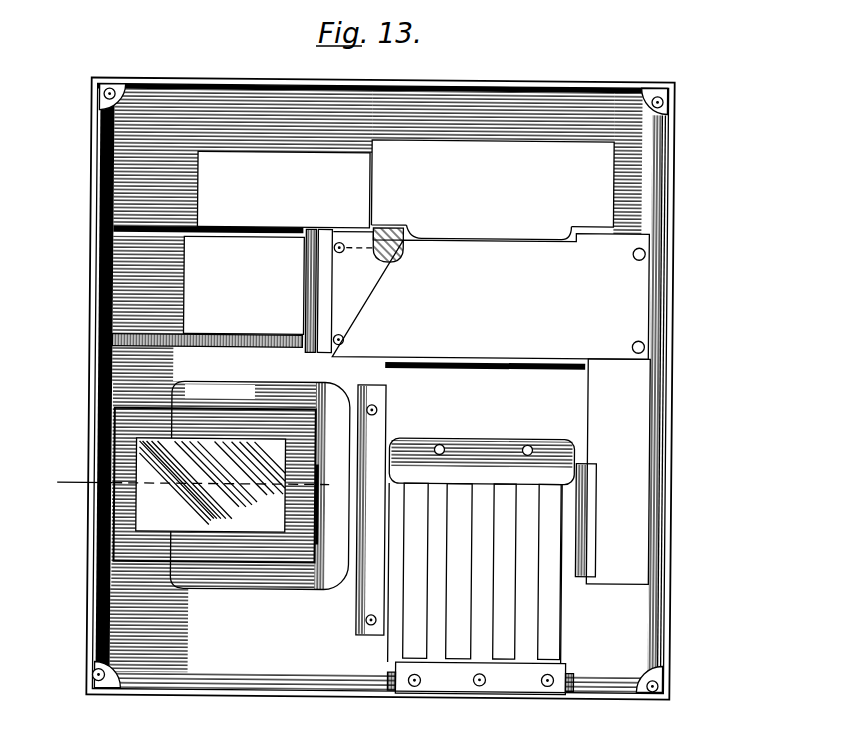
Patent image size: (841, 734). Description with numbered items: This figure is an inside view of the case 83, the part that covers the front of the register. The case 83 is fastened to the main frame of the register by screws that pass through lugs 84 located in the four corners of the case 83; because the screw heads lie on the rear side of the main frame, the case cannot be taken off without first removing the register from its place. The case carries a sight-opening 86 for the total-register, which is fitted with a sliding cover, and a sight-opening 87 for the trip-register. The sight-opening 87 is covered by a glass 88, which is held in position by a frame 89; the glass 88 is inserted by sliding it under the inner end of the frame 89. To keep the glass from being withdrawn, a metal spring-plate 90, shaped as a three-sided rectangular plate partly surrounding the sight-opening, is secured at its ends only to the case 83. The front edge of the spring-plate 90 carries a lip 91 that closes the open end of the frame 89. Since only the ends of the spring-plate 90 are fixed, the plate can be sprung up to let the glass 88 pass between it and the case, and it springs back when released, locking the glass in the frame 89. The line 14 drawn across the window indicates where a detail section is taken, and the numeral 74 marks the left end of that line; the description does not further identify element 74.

The section line 14 is at (229, 479).
The reference line 74 is at (72, 480).
The case 83 is at (668, 393).
The lugs 84 is at (112, 89).
The sight-opening for the total-register 86 is at (490, 294).
The sight-opening for the trip-register 87 is at (212, 483).
The glass 88 is at (211, 485).
The frame 89 is at (215, 485).
The spring-plate 90 is at (230, 487).
The lip 91 is at (316, 510).